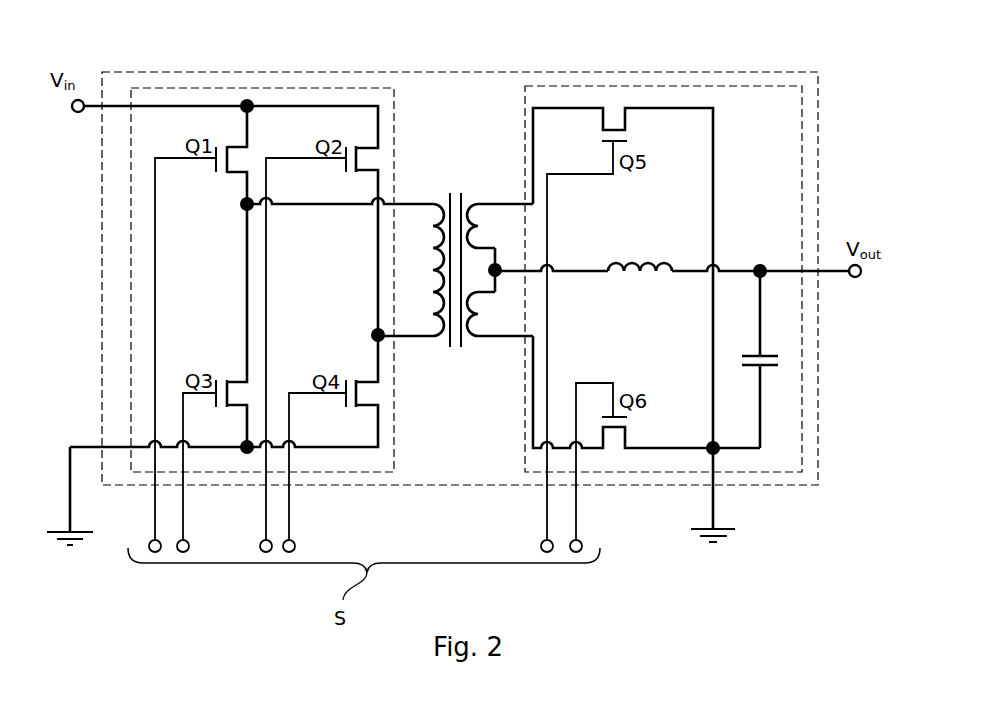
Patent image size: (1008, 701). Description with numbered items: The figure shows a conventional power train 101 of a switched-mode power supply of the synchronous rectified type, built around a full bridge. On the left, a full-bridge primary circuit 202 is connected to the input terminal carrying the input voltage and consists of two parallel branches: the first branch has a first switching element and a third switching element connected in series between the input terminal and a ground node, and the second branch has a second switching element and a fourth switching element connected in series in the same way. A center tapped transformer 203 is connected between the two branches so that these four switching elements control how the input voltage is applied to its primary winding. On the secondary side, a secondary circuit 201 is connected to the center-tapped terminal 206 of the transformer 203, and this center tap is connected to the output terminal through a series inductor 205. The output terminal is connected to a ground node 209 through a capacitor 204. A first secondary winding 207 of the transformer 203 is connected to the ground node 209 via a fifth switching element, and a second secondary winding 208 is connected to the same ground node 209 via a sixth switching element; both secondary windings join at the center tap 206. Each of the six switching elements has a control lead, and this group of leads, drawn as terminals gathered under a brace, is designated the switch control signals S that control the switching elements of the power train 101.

The power train 101 is at (183, 71).
The secondary circuit 201 is at (718, 86).
The full-bridge primary circuit 202 is at (296, 86).
The center tapped transformer 203 is at (455, 277).
The capacitor 204 is at (752, 372).
The series inductor 205 is at (627, 262).
The center-tapped terminal 206 is at (498, 272).
The first secondary winding 207 is at (473, 203).
The second secondary winding 208 is at (478, 341).
The ground node 209 is at (708, 452).